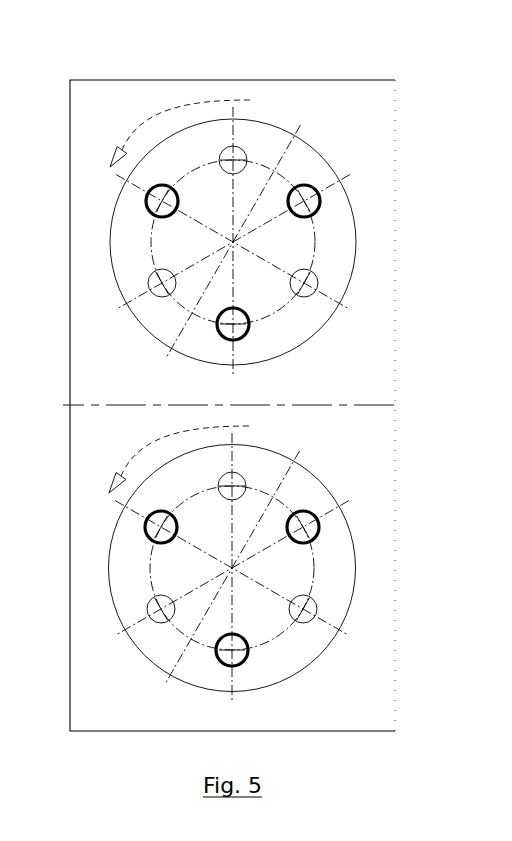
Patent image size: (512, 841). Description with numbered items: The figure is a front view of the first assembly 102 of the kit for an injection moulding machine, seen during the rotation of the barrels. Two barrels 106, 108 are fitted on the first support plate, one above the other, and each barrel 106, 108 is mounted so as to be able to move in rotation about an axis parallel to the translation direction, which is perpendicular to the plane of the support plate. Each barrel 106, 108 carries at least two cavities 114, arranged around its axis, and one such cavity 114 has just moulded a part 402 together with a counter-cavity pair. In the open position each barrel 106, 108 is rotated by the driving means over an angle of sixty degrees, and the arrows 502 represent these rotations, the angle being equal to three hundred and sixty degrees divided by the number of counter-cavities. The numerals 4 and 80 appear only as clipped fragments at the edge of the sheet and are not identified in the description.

The first assembly 102 is at (343, 48).
The barrel 106 is at (337, 257).
The barrel 108 is at (337, 595).
The cavity 114 is at (318, 298).
The part 402 is at (320, 201).
The arrows 502 is at (180, 110).
The partial numeral (clipped) 4 is at (3, 54).
The partial numeral (clipped) 80 is at (10, 362).